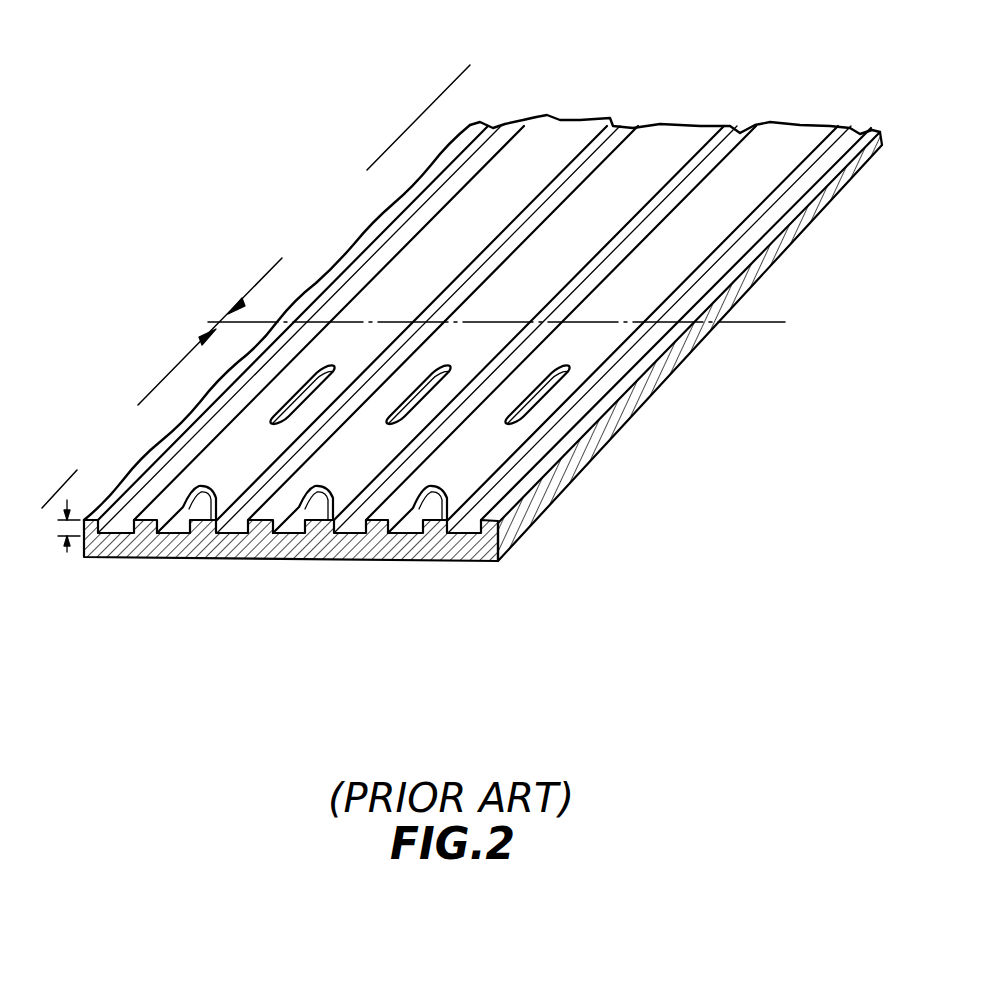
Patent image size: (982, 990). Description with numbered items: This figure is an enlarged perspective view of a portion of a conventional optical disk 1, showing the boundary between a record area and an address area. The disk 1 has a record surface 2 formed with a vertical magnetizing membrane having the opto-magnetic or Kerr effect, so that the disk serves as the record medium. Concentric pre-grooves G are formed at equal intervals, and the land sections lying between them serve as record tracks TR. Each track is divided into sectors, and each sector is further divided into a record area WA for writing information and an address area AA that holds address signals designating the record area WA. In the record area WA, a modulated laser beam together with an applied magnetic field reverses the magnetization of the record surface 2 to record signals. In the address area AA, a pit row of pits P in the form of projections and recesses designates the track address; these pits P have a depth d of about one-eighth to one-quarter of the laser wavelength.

The optical disk 1 is at (620, 457).
The record surface 2 is at (697, 258).
The record tracks TR is at (553, 133).
The pre-grooves G is at (114, 526).
The pits P is at (277, 528).
The depth d is at (58, 526).
The record area WA is at (461, 308).
The address area AA is at (256, 286).